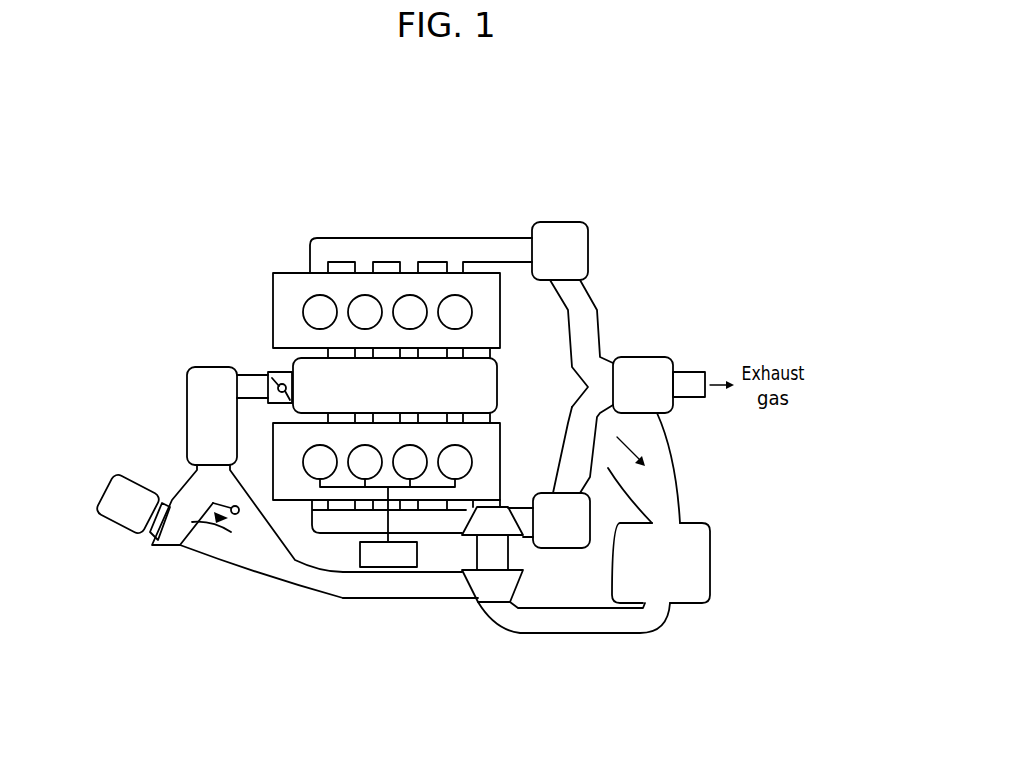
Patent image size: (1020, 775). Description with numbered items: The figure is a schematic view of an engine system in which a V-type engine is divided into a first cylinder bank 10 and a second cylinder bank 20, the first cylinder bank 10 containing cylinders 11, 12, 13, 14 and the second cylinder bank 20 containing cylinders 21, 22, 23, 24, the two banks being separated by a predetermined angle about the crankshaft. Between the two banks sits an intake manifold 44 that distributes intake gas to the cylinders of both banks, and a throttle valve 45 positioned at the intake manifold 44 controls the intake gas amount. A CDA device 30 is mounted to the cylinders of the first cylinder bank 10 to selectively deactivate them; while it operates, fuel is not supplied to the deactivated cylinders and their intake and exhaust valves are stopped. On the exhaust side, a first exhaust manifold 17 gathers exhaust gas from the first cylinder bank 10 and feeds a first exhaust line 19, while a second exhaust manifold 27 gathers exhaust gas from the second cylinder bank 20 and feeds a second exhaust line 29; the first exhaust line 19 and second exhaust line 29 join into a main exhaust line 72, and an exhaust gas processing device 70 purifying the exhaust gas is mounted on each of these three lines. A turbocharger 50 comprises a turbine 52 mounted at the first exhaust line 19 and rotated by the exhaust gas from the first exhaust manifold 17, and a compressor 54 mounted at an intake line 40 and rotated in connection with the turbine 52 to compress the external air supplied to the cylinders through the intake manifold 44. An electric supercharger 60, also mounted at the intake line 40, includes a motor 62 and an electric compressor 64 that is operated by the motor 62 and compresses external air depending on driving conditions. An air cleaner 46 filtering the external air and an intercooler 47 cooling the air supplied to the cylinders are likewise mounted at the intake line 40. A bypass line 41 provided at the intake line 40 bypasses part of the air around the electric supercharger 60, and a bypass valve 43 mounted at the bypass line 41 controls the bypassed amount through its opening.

The first cylinder bank 10 is at (512, 428).
The cylinder 11 is at (306, 453).
The cylinder 12 is at (351, 453).
The cylinder 13 is at (396, 453).
The cylinder 14 is at (441, 453).
The first exhaust manifold 17 is at (332, 537).
The first exhaust line 19 is at (568, 418).
The second cylinder bank 20 is at (273, 303).
The cylinder 21 is at (306, 303).
The cylinder 22 is at (351, 303).
The cylinder 23 is at (396, 303).
The cylinder 24 is at (441, 303).
The second exhaust manifold 27 is at (367, 238).
The second exhaust line 29 is at (592, 302).
The CDA device 30 is at (390, 568).
The intake line 40 is at (497, 628).
The bypass line 41 is at (237, 490).
The bypass valve 43 is at (200, 522).
The intake manifold 44 is at (497, 364).
The throttle valve 45 is at (260, 393).
The air cleaner 46 is at (710, 562).
The intercooler 47 is at (212, 367).
The turbocharger 50 is at (539, 631).
The turbine 52 is at (517, 517).
The compressor 54 is at (520, 587).
The electric supercharger 60 is at (140, 570).
The motor 62 is at (113, 530).
The electric compressor 64 is at (162, 547).
The exhaust gas processing device 70 is at (590, 248).
The main exhaust line 72 is at (697, 372).